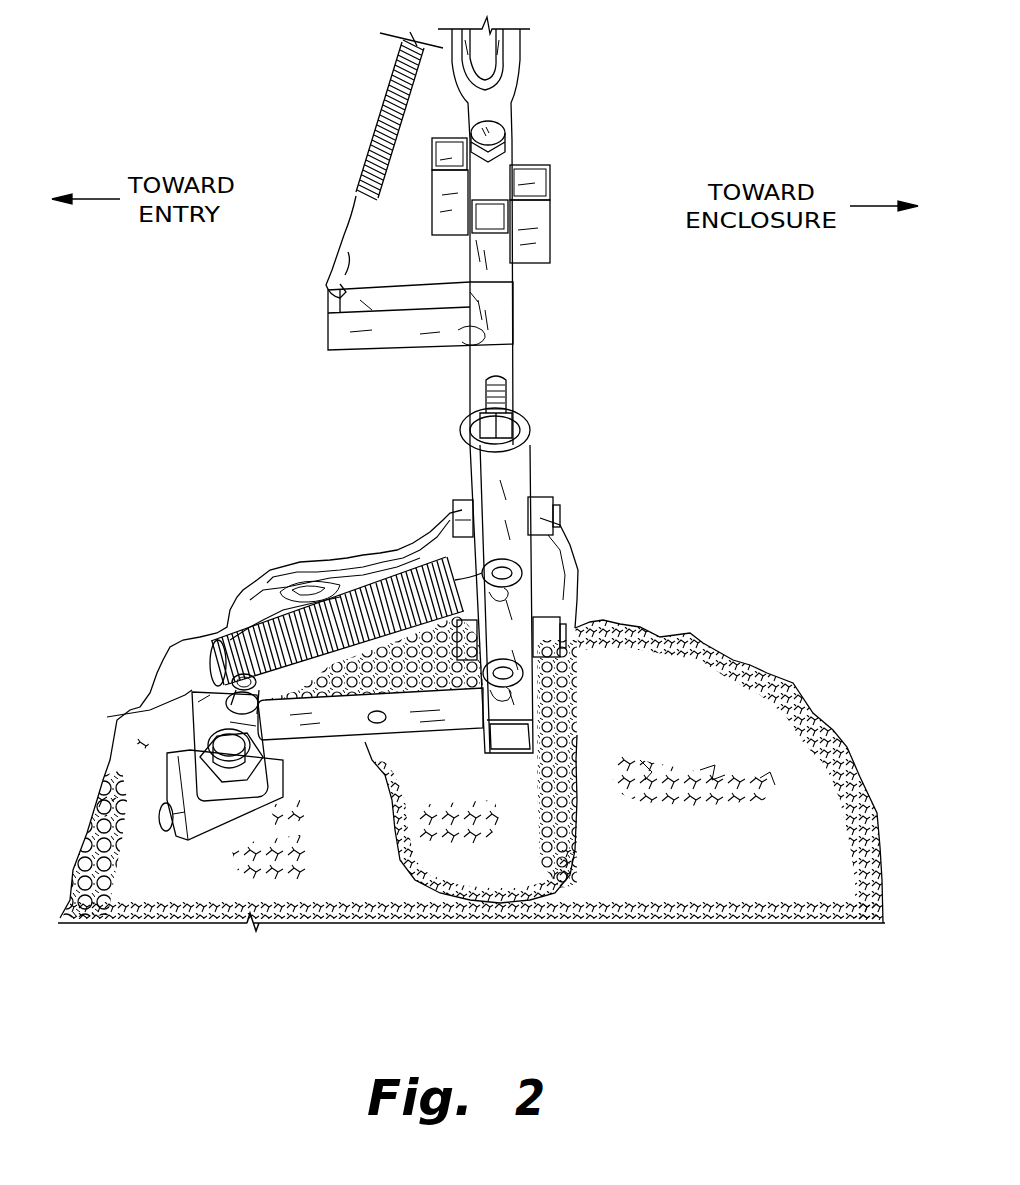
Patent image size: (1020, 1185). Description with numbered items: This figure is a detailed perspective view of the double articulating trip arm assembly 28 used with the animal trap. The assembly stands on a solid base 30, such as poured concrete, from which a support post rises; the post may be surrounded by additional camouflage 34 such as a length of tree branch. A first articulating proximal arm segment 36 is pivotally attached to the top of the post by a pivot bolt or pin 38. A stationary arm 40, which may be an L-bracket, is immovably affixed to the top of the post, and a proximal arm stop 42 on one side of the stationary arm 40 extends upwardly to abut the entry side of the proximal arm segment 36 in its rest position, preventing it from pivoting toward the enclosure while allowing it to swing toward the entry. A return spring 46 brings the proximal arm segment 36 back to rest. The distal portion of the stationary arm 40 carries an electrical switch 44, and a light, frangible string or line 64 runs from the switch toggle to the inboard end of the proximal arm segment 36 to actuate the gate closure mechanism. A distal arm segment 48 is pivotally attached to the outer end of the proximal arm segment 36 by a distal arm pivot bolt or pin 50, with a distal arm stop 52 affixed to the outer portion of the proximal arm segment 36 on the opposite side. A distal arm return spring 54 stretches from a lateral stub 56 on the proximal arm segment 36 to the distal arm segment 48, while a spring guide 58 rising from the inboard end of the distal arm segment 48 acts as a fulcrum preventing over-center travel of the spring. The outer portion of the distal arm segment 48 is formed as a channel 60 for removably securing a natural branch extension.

The trip arm assembly 28 is at (147, 426).
The solid base 30 is at (745, 853).
The camouflage 34 is at (460, 853).
The proximal arm segment 36 is at (565, 597).
The pivot bolt or pin 38 is at (530, 408).
The stationary arm 40 is at (463, 490).
The proximal arm stop 42 is at (455, 530).
The electrical switch 44 is at (190, 718).
The return spring 46 is at (297, 633).
The distal arm segment 48 is at (515, 95).
The distal arm pivot bolt or pin 50 is at (517, 140).
The distal arm stop 52 is at (553, 238).
The distal arm return spring 54 is at (378, 82).
The lateral stub 56 is at (405, 352).
The spring guide 58 is at (432, 218).
The channel 60 is at (497, 50).
The string or line 64 is at (357, 705).